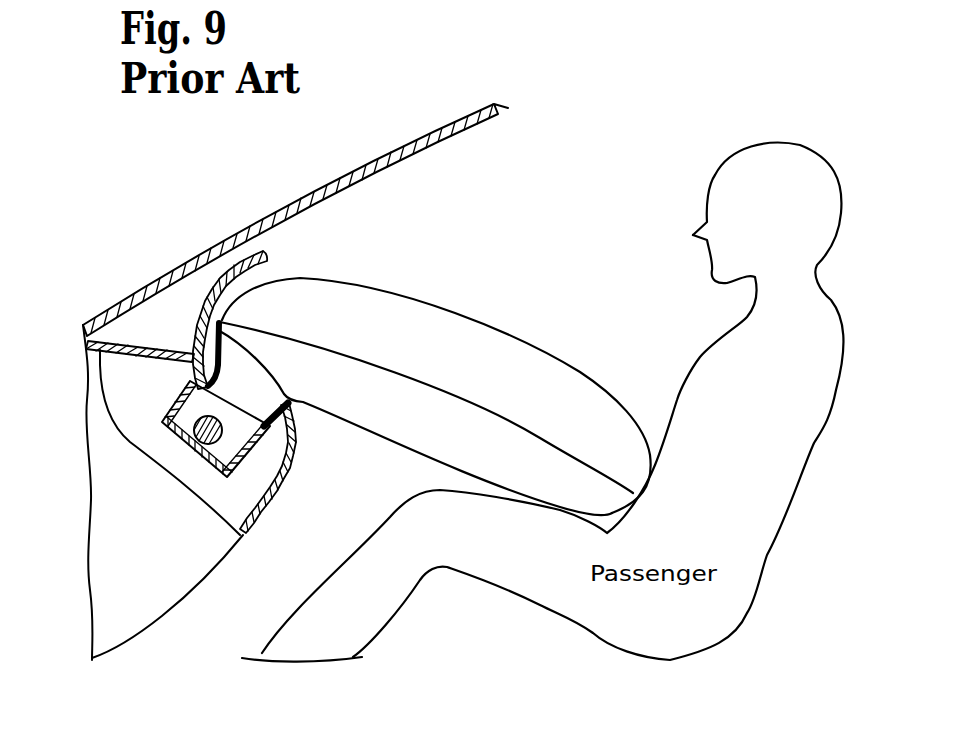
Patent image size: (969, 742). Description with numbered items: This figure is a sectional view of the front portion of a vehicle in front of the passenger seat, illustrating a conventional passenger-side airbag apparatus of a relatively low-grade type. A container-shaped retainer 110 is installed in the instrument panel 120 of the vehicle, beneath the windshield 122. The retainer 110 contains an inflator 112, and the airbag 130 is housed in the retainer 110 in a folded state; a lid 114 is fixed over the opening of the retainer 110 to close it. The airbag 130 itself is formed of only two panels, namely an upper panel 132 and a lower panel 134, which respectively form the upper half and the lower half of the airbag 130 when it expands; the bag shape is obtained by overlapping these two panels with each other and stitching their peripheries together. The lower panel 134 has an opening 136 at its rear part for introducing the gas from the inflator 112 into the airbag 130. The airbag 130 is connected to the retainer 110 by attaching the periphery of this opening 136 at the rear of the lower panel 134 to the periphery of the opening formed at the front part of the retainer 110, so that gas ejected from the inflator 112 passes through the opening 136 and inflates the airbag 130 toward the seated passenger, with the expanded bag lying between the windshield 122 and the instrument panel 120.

The retainer 110 is at (170, 416).
The inflator 112 is at (183, 433).
The lid 114 is at (262, 251).
The instrument panel 120 is at (170, 336).
The windshield 122 is at (340, 172).
The airbag 130 is at (511, 331).
The upper panel 132 is at (580, 397).
The lower panel 134 is at (361, 412).
The opening 136 is at (251, 413).